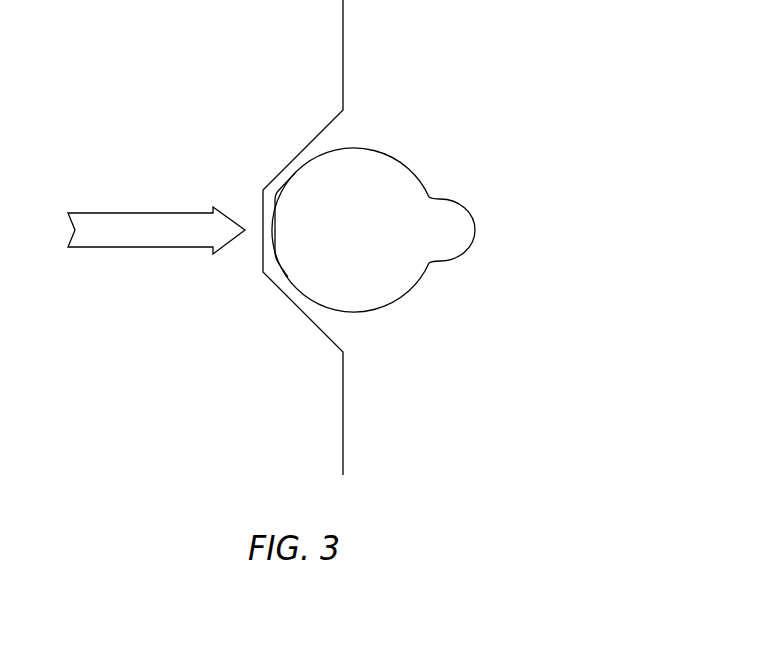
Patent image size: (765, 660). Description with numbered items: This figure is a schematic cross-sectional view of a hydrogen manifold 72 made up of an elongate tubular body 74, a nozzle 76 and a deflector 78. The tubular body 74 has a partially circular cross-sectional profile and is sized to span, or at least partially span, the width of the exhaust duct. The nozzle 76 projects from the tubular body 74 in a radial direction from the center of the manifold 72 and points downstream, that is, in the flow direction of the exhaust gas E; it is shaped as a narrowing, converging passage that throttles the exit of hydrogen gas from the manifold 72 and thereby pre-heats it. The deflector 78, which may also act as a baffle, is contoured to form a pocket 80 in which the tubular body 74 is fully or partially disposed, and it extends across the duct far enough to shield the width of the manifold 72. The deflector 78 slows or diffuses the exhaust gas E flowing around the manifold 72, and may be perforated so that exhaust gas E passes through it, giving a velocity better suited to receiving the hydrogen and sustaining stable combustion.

The manifold 72 is at (415, 168).
The tubular body 74 is at (365, 313).
The nozzle 76 is at (467, 213).
The deflector 78 is at (347, 27).
The pocket 80 is at (325, 148).
The exhaust gas E is at (136, 232).